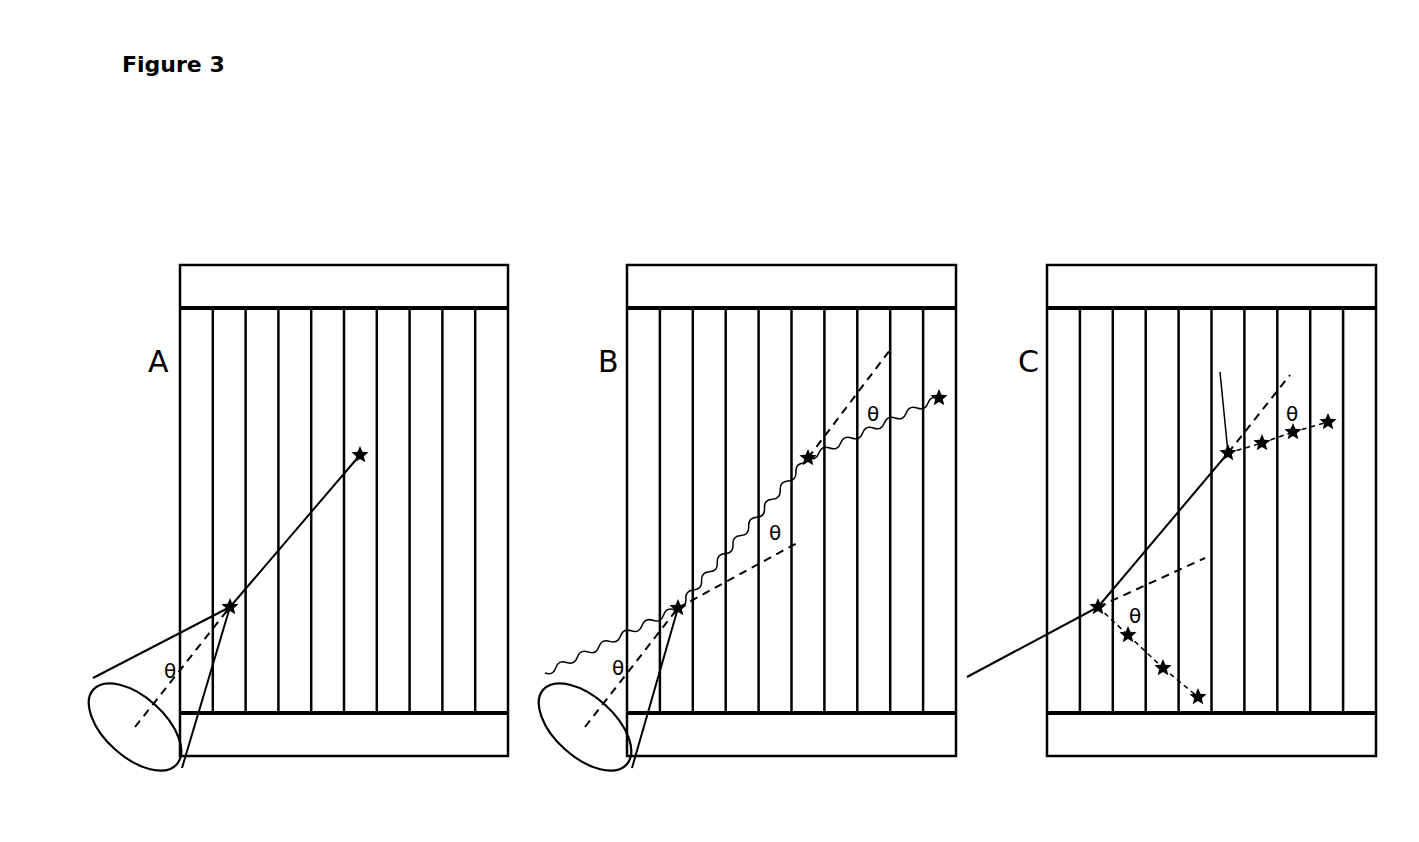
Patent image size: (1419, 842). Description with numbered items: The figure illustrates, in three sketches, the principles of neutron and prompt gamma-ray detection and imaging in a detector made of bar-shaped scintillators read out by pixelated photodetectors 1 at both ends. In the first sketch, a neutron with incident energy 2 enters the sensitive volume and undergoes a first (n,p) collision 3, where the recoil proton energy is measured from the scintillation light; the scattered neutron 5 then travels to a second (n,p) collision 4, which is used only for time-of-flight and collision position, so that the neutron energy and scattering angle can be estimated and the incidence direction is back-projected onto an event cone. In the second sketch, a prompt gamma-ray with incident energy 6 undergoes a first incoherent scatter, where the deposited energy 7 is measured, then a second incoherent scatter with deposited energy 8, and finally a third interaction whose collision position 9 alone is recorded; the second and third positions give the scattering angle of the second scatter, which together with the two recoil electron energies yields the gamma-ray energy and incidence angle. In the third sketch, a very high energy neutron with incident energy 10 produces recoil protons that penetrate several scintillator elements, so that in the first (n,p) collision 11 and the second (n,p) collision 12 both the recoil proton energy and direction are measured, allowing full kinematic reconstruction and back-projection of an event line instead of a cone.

The pixelated photodetectors 1 is at (778, 510).
The energy of incident neutron 2 is at (151, 697).
The first (n,p) collision 3 is at (244, 617).
The second (n,p) collision 4 is at (377, 464).
The scattered neutron from the first event 5 is at (295, 531).
The energy of incident prompt gamma-ray 6 is at (600, 697).
The first incoherent scatter event energy measurement 7 is at (681, 623).
The second incoherent scatter event energy measurement 8 is at (807, 444).
The third scatter event collision position measurement 9 is at (939, 380).
The energy of incident high energy neutron 10 is at (1097, 565).
The first (n,p) collision with recoil proton tracking 11 is at (1147, 651).
The second (n,p) collision with recoil proton tracking 12 is at (1277, 450).